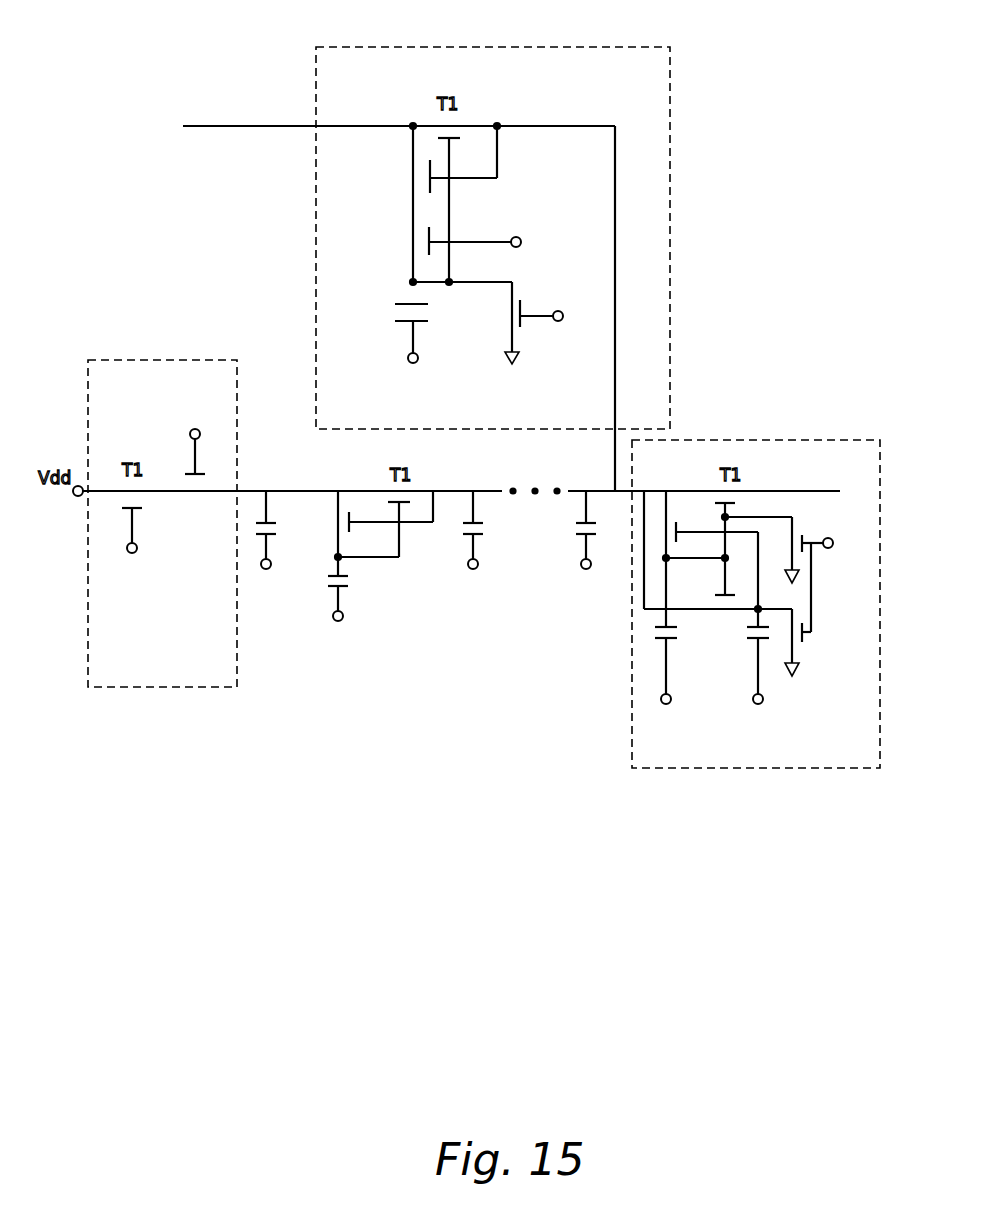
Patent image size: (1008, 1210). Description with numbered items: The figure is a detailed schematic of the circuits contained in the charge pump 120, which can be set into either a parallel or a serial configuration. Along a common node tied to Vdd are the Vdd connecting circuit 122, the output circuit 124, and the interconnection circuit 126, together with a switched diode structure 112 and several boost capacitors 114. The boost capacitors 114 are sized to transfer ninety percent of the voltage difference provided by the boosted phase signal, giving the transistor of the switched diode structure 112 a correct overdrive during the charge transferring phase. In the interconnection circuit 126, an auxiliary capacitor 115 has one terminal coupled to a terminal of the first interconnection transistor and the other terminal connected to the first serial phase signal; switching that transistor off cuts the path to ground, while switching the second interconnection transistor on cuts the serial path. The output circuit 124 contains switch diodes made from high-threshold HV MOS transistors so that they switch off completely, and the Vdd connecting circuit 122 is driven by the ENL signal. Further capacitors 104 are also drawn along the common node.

The charge pump 120 is at (120, 150).
The Vdd connecting circuit 122 is at (165, 358).
The output circuit 124 is at (745, 438).
The interconnection circuit 126 is at (632, 46).
The switched diode structure 112 is at (407, 489).
The boost capacitor 114 is at (275, 527).
The capacitor 104 is at (478, 527).
The auxiliary capacitor 115 is at (395, 318).